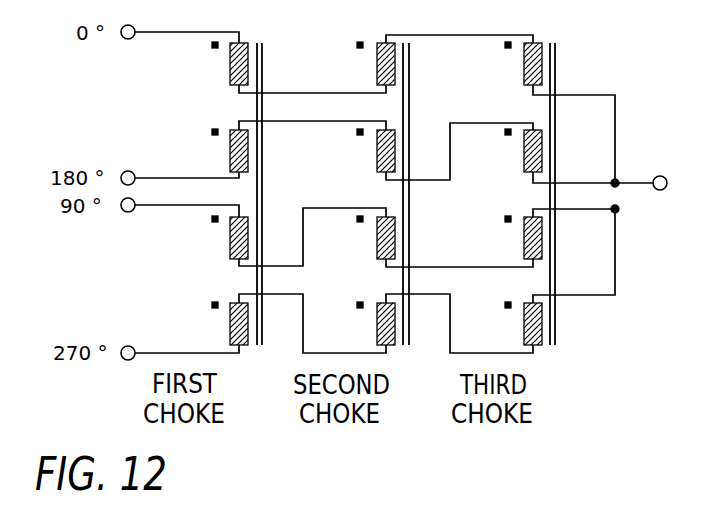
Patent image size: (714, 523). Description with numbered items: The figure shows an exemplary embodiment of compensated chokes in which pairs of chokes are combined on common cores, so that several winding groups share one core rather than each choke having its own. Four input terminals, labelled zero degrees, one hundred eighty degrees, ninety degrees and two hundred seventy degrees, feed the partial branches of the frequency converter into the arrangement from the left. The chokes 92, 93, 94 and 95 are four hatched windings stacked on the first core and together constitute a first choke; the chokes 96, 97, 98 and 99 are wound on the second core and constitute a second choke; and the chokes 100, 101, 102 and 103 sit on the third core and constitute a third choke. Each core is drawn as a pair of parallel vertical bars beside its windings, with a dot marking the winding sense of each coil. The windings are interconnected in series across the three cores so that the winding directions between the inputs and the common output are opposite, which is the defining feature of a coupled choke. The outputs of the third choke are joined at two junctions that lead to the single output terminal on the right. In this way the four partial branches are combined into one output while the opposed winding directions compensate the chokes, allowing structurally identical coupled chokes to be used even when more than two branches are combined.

The choke 92 is at (229, 62).
The choke 93 is at (229, 147).
The choke 94 is at (229, 234).
The choke 95 is at (229, 321).
The choke 96 is at (376, 63).
The choke 97 is at (376, 148).
The choke 98 is at (376, 235).
The choke 99 is at (376, 322).
The choke 100 is at (523, 64).
The choke 101 is at (523, 149).
The choke 102 is at (523, 236).
The choke 103 is at (523, 323).